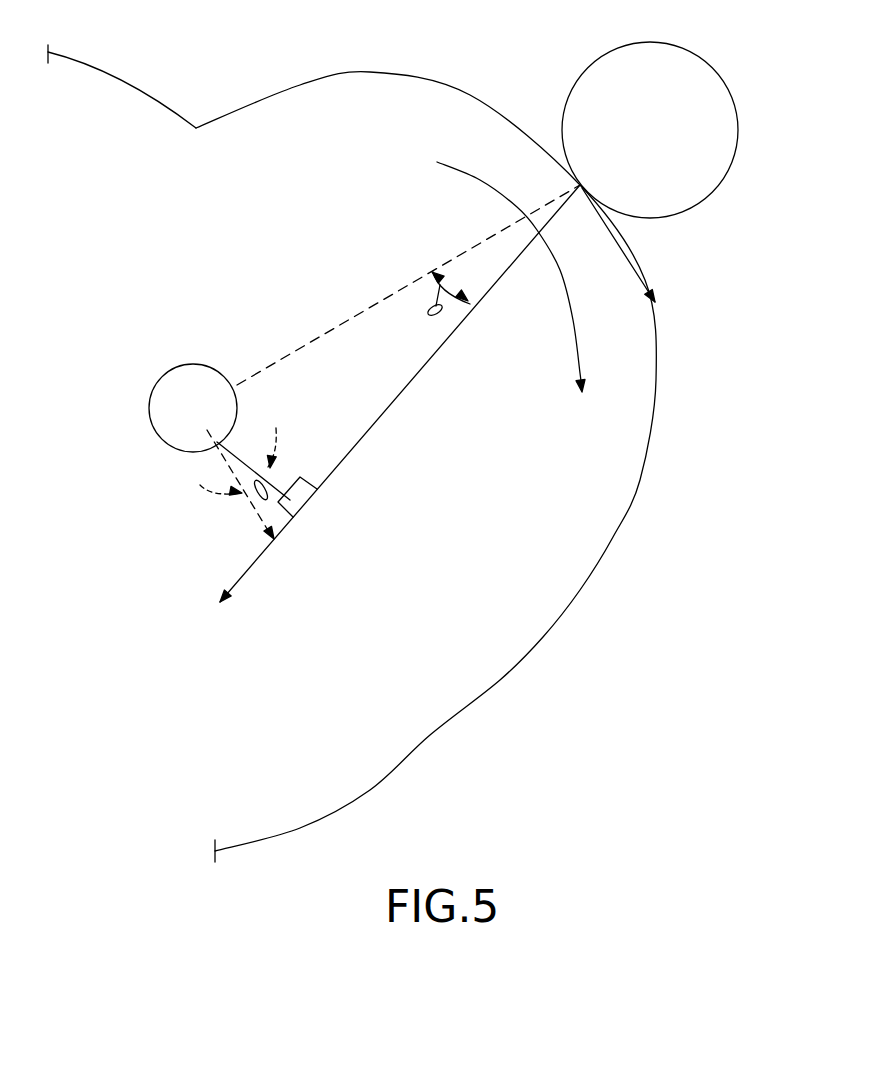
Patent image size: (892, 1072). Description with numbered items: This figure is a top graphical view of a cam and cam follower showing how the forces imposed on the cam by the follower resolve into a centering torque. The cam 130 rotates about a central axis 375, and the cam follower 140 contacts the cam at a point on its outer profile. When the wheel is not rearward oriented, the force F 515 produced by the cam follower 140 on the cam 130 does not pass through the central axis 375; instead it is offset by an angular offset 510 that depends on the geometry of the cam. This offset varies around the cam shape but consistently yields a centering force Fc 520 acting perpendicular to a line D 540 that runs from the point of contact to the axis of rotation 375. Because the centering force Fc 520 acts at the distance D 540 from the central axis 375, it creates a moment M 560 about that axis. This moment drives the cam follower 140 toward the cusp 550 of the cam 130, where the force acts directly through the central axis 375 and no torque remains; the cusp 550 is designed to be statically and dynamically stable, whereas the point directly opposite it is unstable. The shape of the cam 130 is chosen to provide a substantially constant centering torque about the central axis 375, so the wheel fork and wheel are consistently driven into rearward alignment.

The cam 130 is at (458, 572).
The cam follower 140 is at (660, 143).
The central axis 375 is at (193, 398).
The angular offset 510 is at (433, 322).
The force F 515 is at (380, 452).
The centering force Fc 520 is at (690, 268).
The line D 540 is at (322, 285).
The cusp 550 is at (203, 100).
The moment M 560 is at (544, 338).